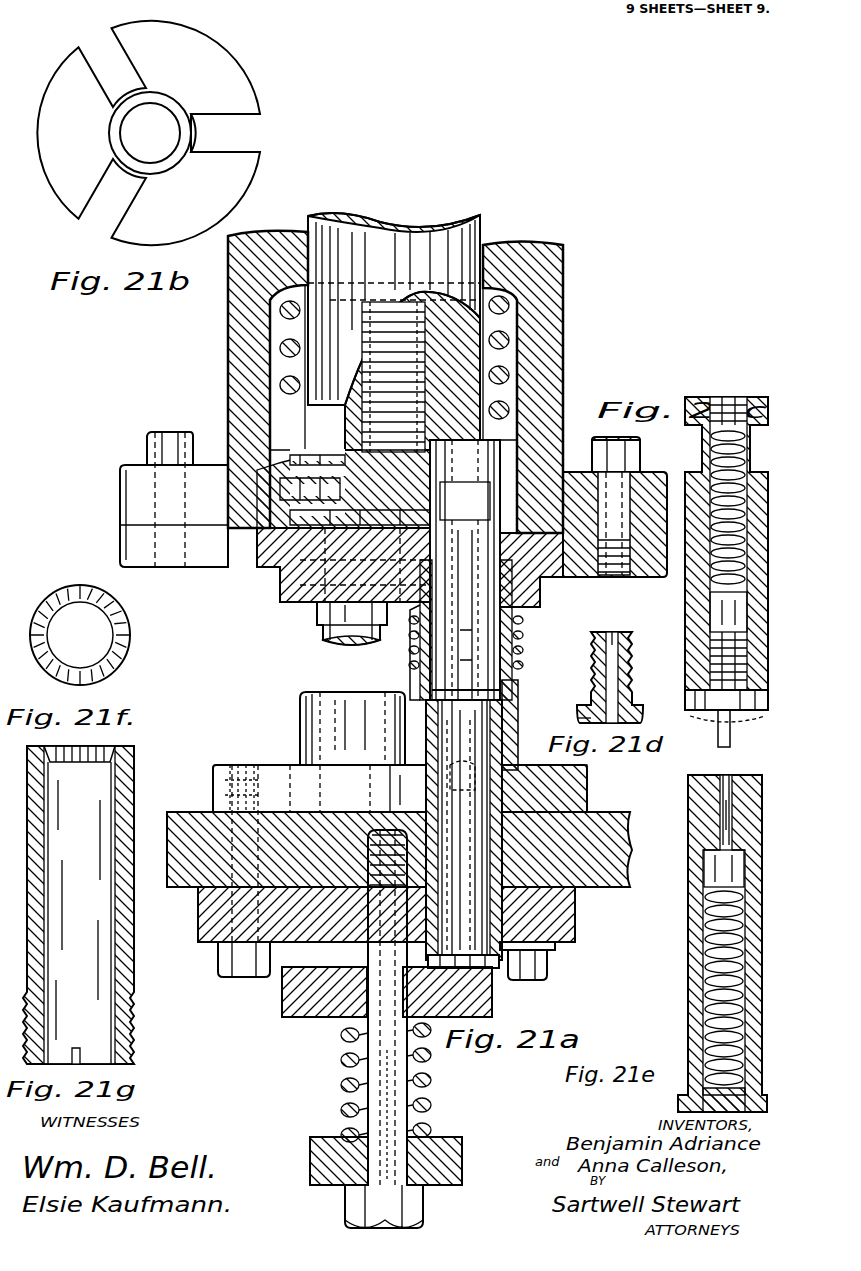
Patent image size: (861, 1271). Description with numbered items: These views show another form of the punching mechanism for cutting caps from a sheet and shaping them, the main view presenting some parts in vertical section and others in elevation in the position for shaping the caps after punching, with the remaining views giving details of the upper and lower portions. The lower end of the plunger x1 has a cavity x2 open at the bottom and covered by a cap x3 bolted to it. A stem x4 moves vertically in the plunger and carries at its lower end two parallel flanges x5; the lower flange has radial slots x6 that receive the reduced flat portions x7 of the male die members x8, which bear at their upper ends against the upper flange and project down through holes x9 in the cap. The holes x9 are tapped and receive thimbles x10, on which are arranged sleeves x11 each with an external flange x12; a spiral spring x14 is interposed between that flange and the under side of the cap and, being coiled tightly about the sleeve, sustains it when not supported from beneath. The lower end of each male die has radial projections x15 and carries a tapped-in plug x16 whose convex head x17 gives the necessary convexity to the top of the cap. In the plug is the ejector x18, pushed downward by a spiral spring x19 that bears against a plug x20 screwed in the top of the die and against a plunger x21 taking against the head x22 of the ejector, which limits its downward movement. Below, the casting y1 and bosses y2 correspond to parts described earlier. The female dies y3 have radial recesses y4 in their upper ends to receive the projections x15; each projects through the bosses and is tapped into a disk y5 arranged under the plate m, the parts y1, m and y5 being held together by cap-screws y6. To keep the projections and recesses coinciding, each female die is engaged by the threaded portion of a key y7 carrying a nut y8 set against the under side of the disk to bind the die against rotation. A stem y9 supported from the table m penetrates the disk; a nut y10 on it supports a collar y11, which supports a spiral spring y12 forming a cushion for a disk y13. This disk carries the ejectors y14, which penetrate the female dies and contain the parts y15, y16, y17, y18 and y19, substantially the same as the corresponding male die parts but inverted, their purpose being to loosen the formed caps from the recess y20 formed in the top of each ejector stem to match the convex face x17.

In FIG. 21A, the lower end of the plunger x1 is at (515, 340).
In FIG. 21A, the cavity x2 is at (505, 389).
In FIG. 21A, the cap x3 is at (583, 570).
In FIG. 21A, the stem x4 is at (305, 365).
In FIG. 21B, the parallel flanges x5 is at (148, 133).
In FIG. 21A, the parallel flanges x5 is at (206, 486).
In FIG. 21B, the radial slots x6 is at (94, 213).
In FIG. 21A, the radial slots x6 is at (502, 505).
In FIG. 21A, the reduced flat portions x7 is at (465, 570).
In FIG. 21C, the reduced flat portions x7 is at (752, 460).
In FIG. 21A, the male die members x8 is at (458, 615).
In FIG. 21C, the male die members x8 is at (768, 712).
In FIG. 21A, the holes x9 is at (500, 555).
In FIG. 21A, the thimbles x10 is at (512, 680).
In FIG. 21A, the sleeves x11 is at (520, 648).
In FIG. 21A, the external flange x12 is at (394, 652).
In FIG. 21A, the spiral spring x14 is at (520, 623).
In FIG. 21C, the radial projections x15 is at (700, 715).
In FIG. 21D, the plug x16 is at (630, 694).
In FIG. 21D, the convex head x17 is at (578, 718).
In FIG. 21C, the ejector x18 is at (732, 747).
In FIG. 21C, the spiral spring x19 is at (715, 455).
In FIG. 21C, the plug x20 is at (735, 405).
In FIG. 21C, the plunger x21 is at (712, 621).
In FIG. 21C, the head of the ejector x22 is at (705, 640).
In FIG. 21A, the plate m is at (411, 849).
In FIG. 21A, the casting y1 is at (587, 798).
In FIG. 21A, the bosses y2 is at (300, 728).
In FIG. 21A, the female dies y3 is at (560, 893).
In FIG. 21F, the female dies y3 is at (112, 665).
In FIG. 21G, the female dies y3 is at (120, 925).
In FIG. 21F, the radial recesses y4 is at (122, 640).
In FIG. 21G, the radial recesses y4 is at (122, 755).
In FIG. 21A, the disk y5 is at (210, 944).
In FIG. 21A, the cap-screws y6 is at (240, 978).
In FIG. 21A, the key y7 is at (545, 948).
In FIG. 21A, the nut y8 is at (540, 978).
In FIG. 21A, the stem y9 is at (412, 1100).
In FIG. 21A, the nut y10 is at (425, 1205).
In FIG. 21A, the collar y11 is at (462, 1161).
In FIG. 21A, the spiral spring y12 is at (350, 1091).
In FIG. 21A, the disk y13 is at (492, 1006).
In FIG. 21A, the ejectors y14 is at (464, 834).
In FIG. 21E, the ejectors y14 is at (700, 805).
In FIG. 21E, the ejector y15 is at (732, 808).
In FIG. 21E, the spiral spring y16 is at (708, 958).
In FIG. 21E, the plug y17 is at (703, 1098).
In FIG. 21E, the plunger y18 is at (712, 878).
In FIG. 21E, the head y19 is at (712, 855).
In FIG. 21E, the recess y20 is at (704, 775).